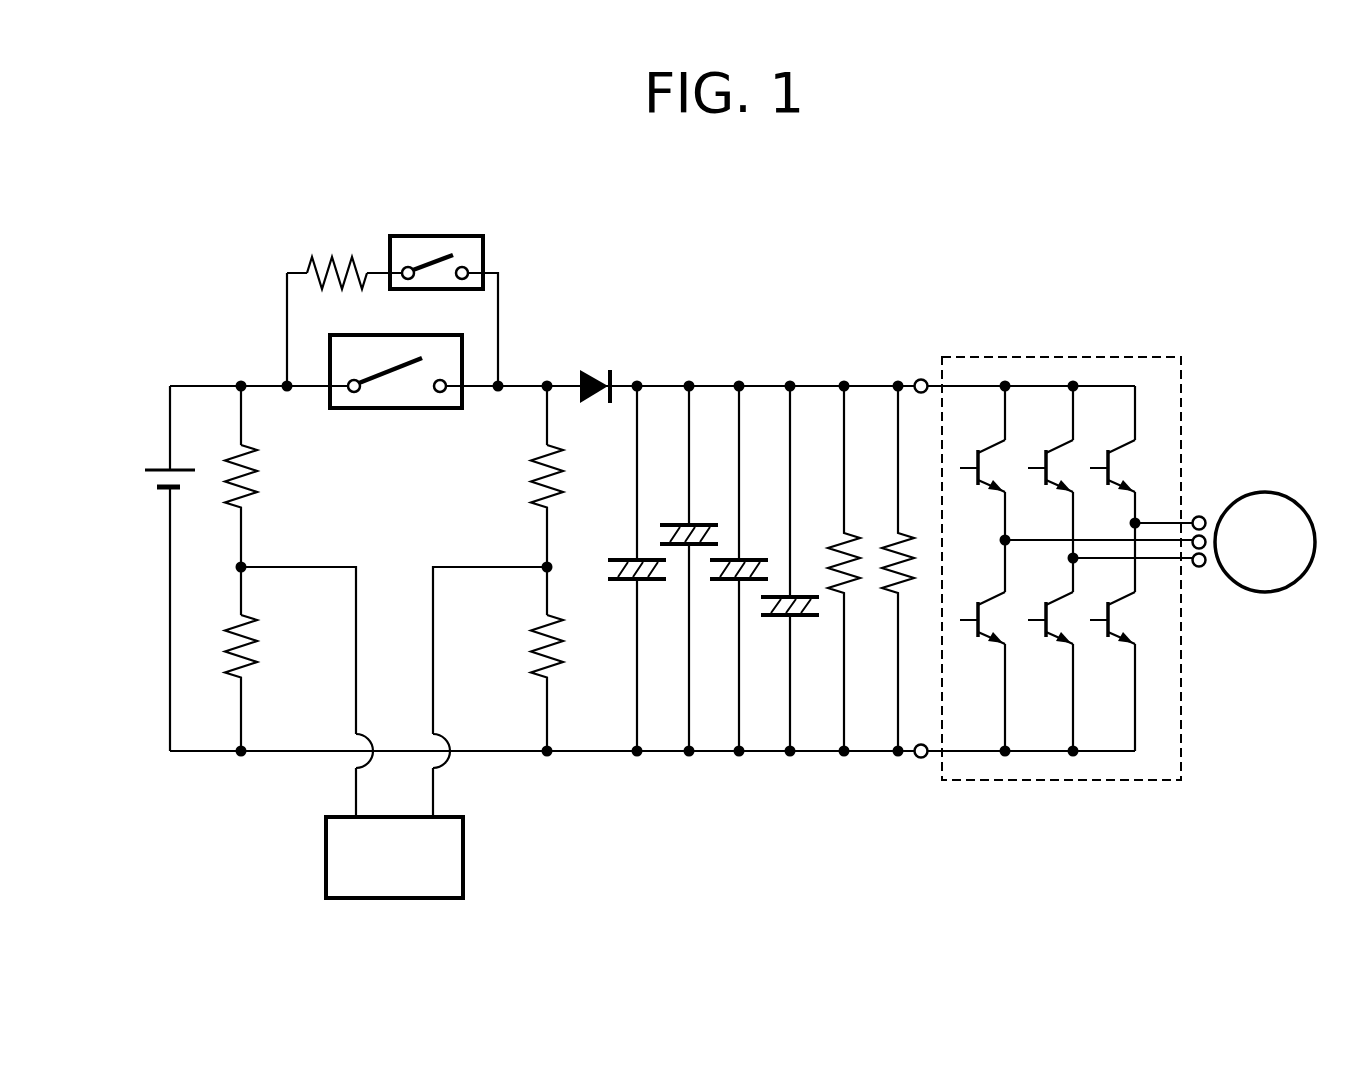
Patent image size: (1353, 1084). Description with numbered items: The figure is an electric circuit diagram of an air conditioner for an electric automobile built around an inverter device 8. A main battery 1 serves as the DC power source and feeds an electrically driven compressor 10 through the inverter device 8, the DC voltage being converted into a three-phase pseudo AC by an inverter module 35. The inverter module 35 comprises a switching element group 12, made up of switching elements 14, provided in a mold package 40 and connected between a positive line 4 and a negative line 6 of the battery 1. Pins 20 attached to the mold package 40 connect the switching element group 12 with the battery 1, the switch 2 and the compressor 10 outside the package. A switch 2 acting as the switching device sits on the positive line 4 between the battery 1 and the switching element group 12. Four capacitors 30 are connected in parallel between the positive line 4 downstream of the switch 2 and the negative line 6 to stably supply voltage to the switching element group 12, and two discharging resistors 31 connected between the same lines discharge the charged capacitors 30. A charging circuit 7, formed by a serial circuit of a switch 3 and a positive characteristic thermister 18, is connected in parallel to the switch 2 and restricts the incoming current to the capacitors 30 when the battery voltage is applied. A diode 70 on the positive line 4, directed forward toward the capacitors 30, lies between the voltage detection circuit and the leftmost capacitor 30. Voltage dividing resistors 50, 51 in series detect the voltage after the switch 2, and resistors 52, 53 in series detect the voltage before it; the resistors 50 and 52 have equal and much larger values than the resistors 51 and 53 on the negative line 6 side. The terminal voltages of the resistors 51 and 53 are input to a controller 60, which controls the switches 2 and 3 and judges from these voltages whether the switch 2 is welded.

The main battery 1 is at (149, 487).
The switch 2 is at (352, 355).
The switch 3 is at (455, 243).
The positive line 4 is at (186, 384).
The negative line 6 is at (292, 750).
The charging circuit 7 is at (378, 247).
The inverter device 8 is at (1070, 476).
The electrically driven compressor 10 is at (1262, 593).
The switching element group 12 is at (1128, 375).
The switching element 14 is at (1055, 425).
The positive characteristic thermister 18 is at (325, 257).
The pins 20 is at (920, 378).
The capacitors 30 is at (667, 520).
The discharging resistors 31 is at (840, 525).
The inverter module 35 is at (1070, 544).
The mold package 40 is at (1107, 544).
The voltage dividing resistor 50 is at (540, 445).
The voltage dividing resistor 51 is at (532, 672).
The voltage dividing resistor 52 is at (218, 460).
The voltage dividing resistor 53 is at (225, 645).
The controller 60 is at (343, 842).
The diode 70 is at (592, 373).